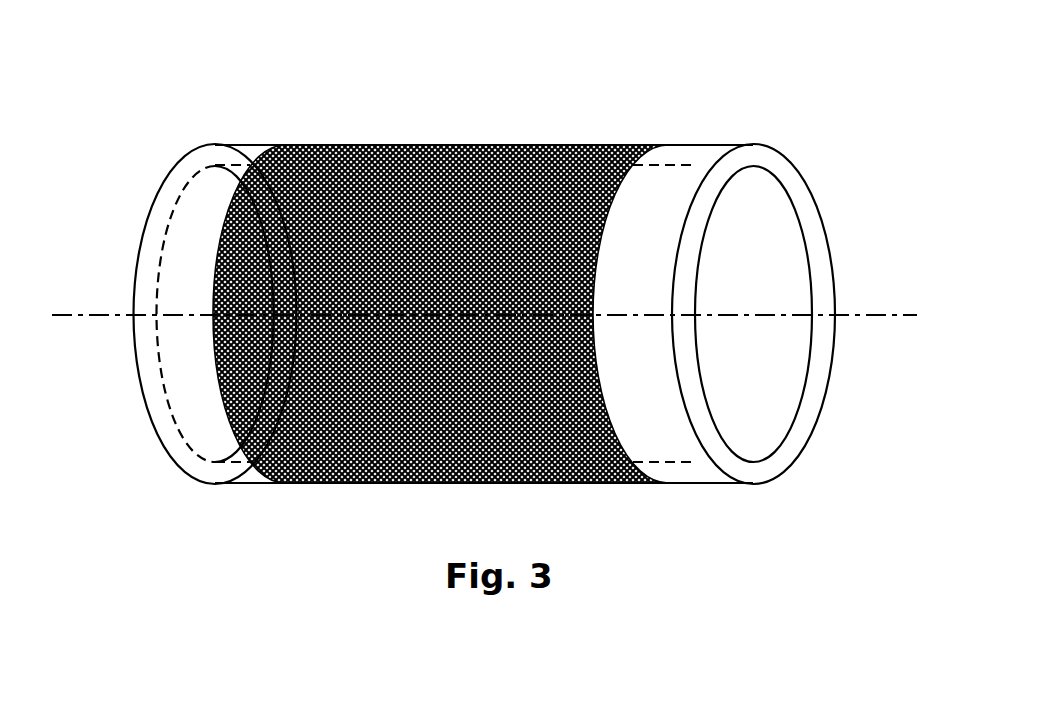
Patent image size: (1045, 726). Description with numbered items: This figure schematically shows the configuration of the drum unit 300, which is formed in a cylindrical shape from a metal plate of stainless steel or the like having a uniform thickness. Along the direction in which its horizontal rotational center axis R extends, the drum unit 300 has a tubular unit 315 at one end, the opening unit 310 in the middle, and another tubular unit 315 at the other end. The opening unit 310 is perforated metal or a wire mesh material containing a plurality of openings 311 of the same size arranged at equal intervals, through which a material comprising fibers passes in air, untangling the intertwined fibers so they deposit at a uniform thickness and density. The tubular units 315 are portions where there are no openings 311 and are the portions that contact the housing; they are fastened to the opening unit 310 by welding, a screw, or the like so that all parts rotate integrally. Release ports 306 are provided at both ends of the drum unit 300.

The drum unit 300 is at (888, 32).
The opening unit 310 is at (500, 132).
The openings 311 is at (597, 147).
The tubular unit 315 is at (247, 147).
The release ports 306 is at (170, 286).
The rotational center axis R is at (98, 318).